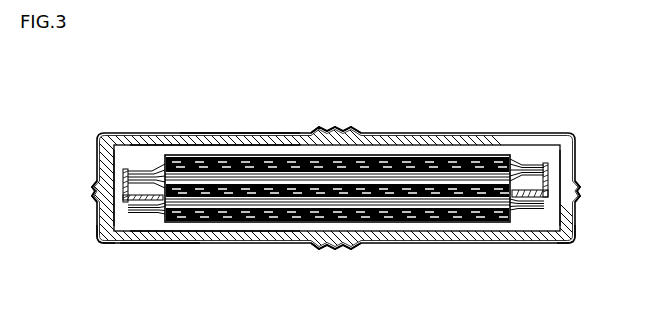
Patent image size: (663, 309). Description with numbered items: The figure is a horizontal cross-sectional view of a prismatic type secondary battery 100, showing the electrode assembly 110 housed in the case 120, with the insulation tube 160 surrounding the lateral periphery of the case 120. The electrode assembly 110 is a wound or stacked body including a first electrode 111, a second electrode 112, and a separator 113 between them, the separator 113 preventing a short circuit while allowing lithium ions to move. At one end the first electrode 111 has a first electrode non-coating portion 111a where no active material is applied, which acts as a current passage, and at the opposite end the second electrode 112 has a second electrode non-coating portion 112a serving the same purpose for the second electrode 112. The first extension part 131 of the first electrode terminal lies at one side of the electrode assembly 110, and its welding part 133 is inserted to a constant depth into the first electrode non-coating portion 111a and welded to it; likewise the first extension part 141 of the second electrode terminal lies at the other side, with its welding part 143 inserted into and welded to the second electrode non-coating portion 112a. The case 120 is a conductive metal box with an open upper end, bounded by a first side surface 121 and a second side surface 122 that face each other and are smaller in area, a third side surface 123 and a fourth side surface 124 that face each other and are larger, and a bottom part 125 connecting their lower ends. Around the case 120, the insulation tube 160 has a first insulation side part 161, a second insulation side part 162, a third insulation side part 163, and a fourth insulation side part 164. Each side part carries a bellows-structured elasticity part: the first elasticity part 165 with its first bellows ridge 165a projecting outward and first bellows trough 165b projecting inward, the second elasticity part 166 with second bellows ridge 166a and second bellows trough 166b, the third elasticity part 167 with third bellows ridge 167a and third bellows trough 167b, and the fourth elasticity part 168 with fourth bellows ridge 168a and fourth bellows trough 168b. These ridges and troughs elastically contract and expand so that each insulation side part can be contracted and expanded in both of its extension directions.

The prismatic type secondary battery 100 is at (56, 90).
The electrode assembly 110 is at (470, 154).
The first electrode 111 is at (152, 160).
The first electrode non-coating portion 111a is at (137, 162).
The second electrode 112 is at (518, 160).
The second electrode non-coating portion 112a is at (537, 160).
The separator 113 is at (410, 155).
The case 120 is at (513, 236).
The first side surface 121 is at (113, 220).
The second side surface 122 is at (573, 220).
The third side surface 123 is at (201, 243).
The fourth side surface 124 is at (432, 134).
The bottom part 125 is at (123, 225).
The first extension part 131 is at (122, 173).
The welding part 133 is at (122, 196).
The first extension part 141 is at (549, 167).
The welding part 143 is at (549, 195).
The insulation tube 160 is at (88, 138).
The first insulation side part 161 is at (103, 234).
The second insulation side part 162 is at (573, 235).
The third insulation side part 163 is at (146, 243).
The fourth insulation side part 164 is at (230, 133).
The first elasticity part 165 is at (90, 192).
The first bellows ridge 165a is at (94, 198).
The first bellows trough 165b is at (94, 184).
The second elasticity part 166 is at (584, 189).
The second bellows ridge 166a is at (578, 194).
The second bellows trough 166b is at (579, 184).
The third elasticity part 167 is at (344, 250).
The third bellows ridge 167a is at (318, 249).
The third bellows trough 167b is at (328, 250).
The fourth elasticity part 168 is at (344, 126).
The fourth bellows ridge 168a is at (318, 127).
The fourth bellows trough 168b is at (327, 130).